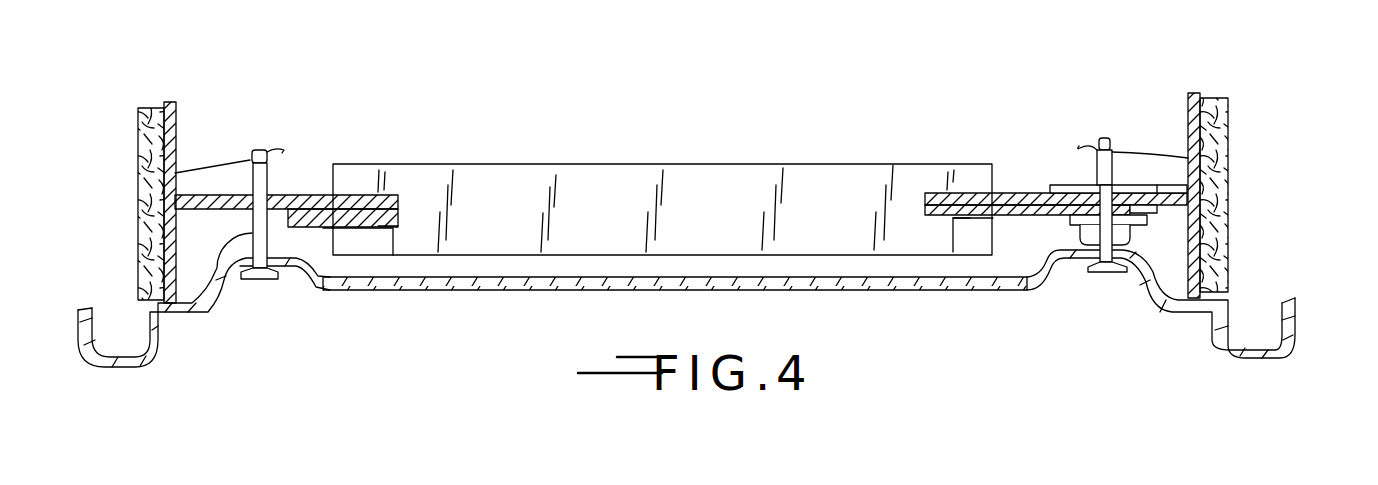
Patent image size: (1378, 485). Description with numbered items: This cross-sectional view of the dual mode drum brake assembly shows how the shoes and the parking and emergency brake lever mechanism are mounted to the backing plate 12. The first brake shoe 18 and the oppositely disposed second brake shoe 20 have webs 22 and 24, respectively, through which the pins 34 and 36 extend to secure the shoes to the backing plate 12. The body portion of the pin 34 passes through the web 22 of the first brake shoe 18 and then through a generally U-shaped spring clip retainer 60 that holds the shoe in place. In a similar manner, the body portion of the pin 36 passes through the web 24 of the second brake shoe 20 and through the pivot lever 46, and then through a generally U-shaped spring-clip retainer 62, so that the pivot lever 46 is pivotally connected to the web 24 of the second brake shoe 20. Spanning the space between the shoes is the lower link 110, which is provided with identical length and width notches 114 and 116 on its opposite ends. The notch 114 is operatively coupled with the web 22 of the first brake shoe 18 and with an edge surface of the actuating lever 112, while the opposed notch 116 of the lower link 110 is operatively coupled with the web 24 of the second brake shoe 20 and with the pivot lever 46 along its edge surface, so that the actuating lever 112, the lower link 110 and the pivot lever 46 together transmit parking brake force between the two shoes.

The first brake shoe 18 is at (122, 130).
The second brake shoe 20 is at (1243, 127).
The web 22 is at (307, 190).
The web 24 is at (1017, 190).
The spring clip retainer 60 is at (252, 193).
The pin 36 is at (1085, 178).
The spring-clip retainer 62 is at (1188, 178).
The lower link 110 is at (600, 163).
The backing plate 12 is at (647, 292).
The pin 34 is at (224, 303).
The pivot lever 46 is at (1025, 218).
The actuating lever 112 is at (323, 230).
The notch 114 is at (378, 222).
The notch 116 is at (953, 220).